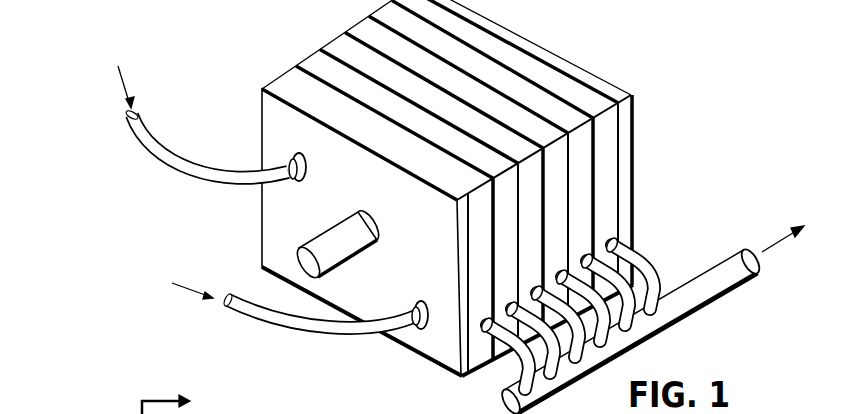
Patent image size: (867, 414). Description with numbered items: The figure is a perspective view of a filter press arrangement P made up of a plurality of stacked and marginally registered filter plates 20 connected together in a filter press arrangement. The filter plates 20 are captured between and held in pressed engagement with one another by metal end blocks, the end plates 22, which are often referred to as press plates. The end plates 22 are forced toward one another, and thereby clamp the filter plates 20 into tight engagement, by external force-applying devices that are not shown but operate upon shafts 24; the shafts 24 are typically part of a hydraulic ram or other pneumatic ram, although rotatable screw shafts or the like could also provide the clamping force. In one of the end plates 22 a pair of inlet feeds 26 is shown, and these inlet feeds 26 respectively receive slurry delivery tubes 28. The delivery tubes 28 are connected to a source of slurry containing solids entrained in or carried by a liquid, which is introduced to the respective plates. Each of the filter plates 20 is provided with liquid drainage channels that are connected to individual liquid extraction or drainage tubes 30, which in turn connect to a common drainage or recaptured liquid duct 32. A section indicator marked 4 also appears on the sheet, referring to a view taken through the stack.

The filter plates 20 is at (392, 1).
The end plates 22 is at (265, 121).
The shafts 24 is at (330, 227).
The inlet feeds 26 is at (421, 303).
The slurry delivery tubes 28 is at (295, 328).
The liquid drainage tubes 30 is at (656, 270).
The recaptured liquid duct 32 is at (703, 286).
The filter press arrangement P is at (634, 59).
The section line for FIG. 4 is at (155, 399).